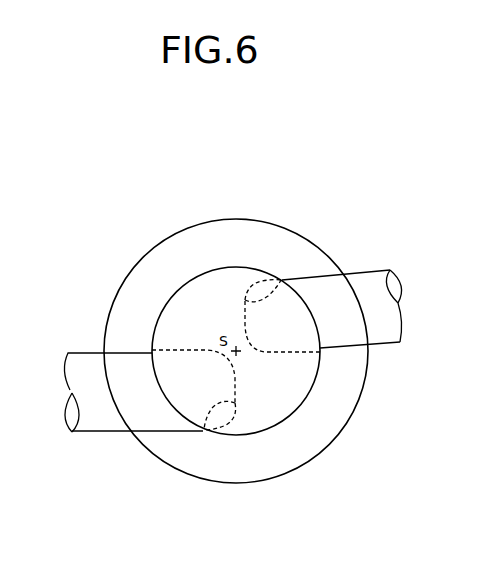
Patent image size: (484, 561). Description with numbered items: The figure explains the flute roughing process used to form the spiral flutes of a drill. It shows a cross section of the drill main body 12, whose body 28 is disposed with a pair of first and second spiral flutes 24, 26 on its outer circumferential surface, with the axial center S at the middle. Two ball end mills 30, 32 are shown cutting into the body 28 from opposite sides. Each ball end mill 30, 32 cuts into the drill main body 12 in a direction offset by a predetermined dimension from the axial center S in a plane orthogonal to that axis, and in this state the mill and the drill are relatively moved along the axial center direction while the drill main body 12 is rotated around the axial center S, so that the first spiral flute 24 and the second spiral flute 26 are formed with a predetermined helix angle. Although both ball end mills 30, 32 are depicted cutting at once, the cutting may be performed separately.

The drill main body 12 is at (128, 246).
The first spiral flute 24 is at (203, 432).
The second spiral flute 26 is at (281, 280).
The body 28 is at (282, 400).
The ball end mill 30 is at (100, 408).
The ball end mill 32 is at (358, 292).